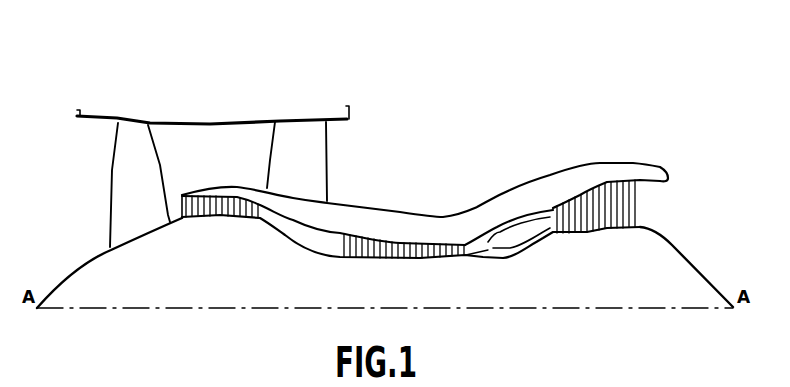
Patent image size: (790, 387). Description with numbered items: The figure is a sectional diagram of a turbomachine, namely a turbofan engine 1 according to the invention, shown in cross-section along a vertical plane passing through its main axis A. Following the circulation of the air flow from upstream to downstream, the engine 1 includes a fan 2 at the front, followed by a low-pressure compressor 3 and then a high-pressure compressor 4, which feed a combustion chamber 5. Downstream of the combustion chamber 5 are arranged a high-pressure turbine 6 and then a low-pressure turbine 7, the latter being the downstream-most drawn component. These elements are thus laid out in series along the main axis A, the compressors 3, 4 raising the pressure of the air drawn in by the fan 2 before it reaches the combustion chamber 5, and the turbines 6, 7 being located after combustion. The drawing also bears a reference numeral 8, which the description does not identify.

The turbofan engine 1 is at (461, 95).
The fan 2 is at (92, 147).
The low-pressure compressor 3 is at (209, 183).
The high-pressure compressor 4 is at (382, 233).
The combustion chamber 5 is at (503, 230).
The high-pressure turbine 6 is at (563, 195).
The low-pressure turbine 7 is at (612, 155).
The outer casing 8 is at (205, 118).